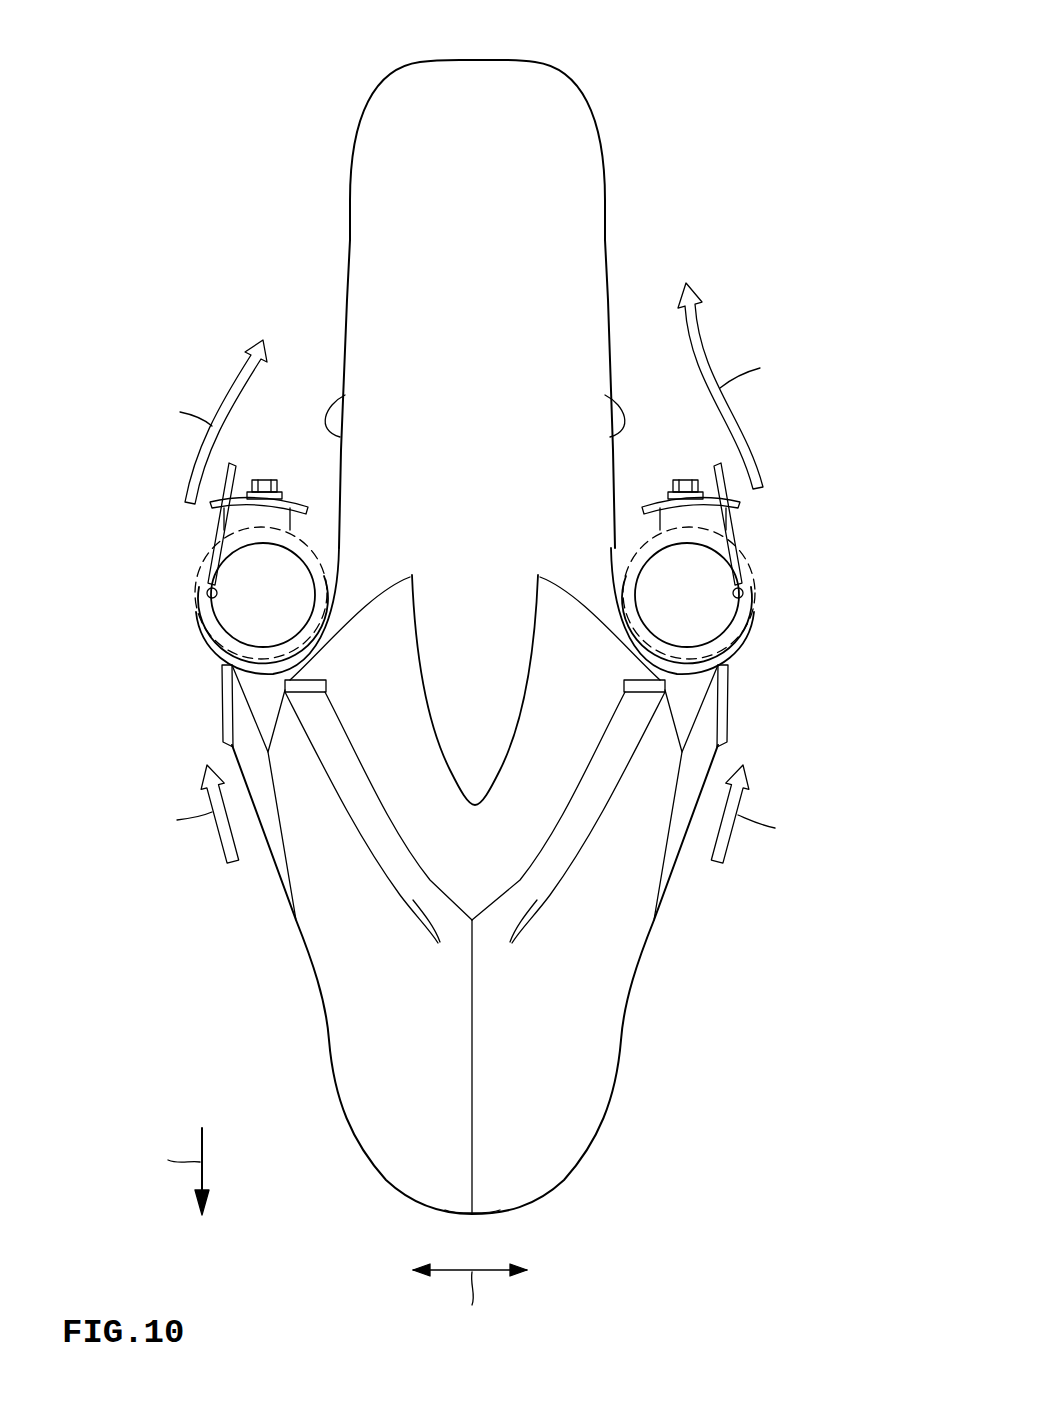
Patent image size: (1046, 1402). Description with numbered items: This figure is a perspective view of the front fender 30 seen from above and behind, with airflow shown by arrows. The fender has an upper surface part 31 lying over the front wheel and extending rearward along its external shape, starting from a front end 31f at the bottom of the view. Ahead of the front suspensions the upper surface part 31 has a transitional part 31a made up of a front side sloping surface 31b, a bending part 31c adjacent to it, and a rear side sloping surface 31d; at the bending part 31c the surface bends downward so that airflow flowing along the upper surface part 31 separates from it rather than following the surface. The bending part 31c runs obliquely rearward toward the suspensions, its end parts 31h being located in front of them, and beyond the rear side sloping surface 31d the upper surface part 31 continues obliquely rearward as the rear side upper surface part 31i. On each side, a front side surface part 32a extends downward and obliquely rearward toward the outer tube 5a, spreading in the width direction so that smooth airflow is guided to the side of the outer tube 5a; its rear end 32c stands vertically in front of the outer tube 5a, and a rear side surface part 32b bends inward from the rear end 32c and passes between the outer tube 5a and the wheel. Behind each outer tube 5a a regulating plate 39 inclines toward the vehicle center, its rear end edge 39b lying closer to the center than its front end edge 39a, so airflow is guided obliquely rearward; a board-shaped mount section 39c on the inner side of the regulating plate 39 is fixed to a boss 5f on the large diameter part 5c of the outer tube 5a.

The front fender 30 is at (647, 142).
The upper surface part 31 is at (437, 1058).
The rear side upper surface part 31i is at (483, 68).
The rear side sloping surface 31d is at (420, 784).
The transitional part 31a is at (482, 789).
The front side sloping surface 31b is at (388, 852).
The bending part 31c is at (432, 884).
The end parts 31h is at (300, 676).
The front end 31f is at (472, 1215).
The front side surface part 32a is at (257, 800).
The rear side surface part 32b is at (338, 405).
The rear end 32c is at (222, 672).
The regulating plate 39 is at (200, 530).
The front end edge 39a is at (207, 593).
The rear end edge 39b is at (233, 463).
The mount section 39c is at (303, 505).
The boss 5f is at (298, 530).
The large diameter part 5c is at (196, 609).
The outer tube 5a is at (220, 628).